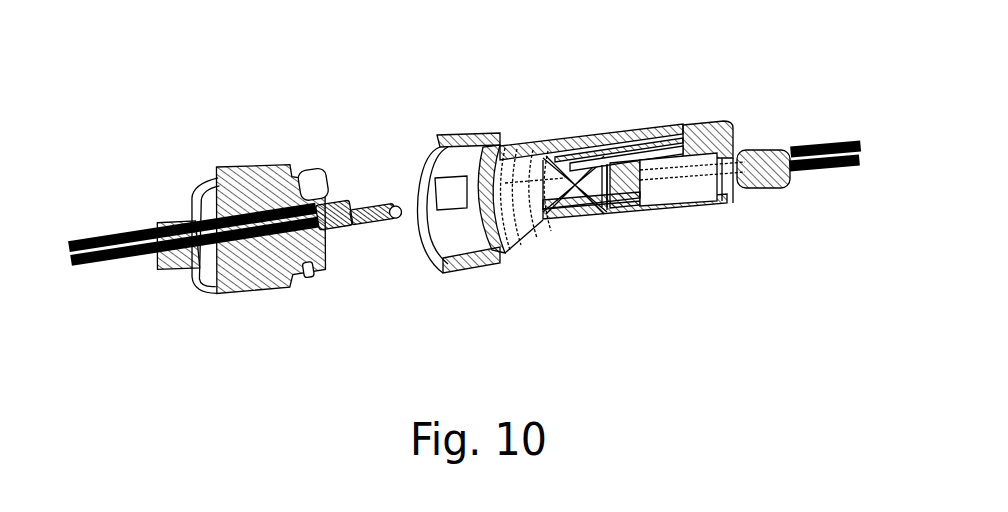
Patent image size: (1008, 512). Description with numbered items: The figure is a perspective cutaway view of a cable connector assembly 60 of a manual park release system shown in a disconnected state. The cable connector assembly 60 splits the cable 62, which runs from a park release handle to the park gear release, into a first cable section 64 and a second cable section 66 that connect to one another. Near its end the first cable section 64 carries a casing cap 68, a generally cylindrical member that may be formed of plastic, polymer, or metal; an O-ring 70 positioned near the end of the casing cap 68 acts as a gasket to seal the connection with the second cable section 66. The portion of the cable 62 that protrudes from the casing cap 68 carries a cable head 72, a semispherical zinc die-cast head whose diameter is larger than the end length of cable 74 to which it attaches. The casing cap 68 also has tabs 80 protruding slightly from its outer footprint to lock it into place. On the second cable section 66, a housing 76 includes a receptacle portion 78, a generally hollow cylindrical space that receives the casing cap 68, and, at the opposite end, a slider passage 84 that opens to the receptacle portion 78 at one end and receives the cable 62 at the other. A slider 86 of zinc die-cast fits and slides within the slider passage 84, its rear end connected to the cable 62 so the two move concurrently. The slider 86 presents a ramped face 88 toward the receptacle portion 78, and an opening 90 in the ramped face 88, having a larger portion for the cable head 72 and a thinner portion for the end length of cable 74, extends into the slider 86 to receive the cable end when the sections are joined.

The cable connector assembly 60 is at (376, 75).
The cable 62 is at (137, 263).
The first cable section 64 is at (218, 158).
The second cable section 66 is at (562, 113).
The casing cap 68 is at (258, 226).
The O-ring 70 is at (313, 184).
The cable head 72 is at (396, 212).
The end length of cable 74 is at (356, 211).
The housing 76 is at (640, 203).
The receptacle portion 78 is at (477, 132).
The tabs 80 is at (450, 192).
The slider passage 84 is at (687, 188).
The slider 86 is at (622, 200).
The ramped face 88 is at (547, 187).
The opening 90 is at (598, 150).